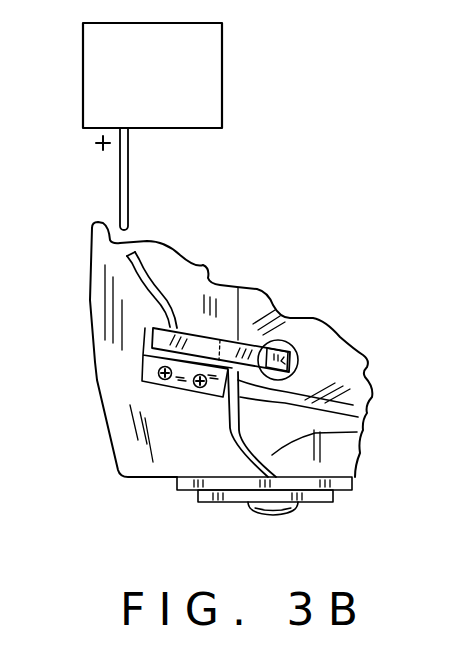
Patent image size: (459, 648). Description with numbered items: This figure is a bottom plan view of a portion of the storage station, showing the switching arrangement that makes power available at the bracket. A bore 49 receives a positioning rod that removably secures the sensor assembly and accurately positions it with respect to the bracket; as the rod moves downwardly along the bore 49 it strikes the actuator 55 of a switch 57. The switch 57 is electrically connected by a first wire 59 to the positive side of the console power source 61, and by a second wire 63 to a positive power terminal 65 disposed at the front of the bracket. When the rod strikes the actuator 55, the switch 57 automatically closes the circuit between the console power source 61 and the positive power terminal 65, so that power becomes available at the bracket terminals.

The console power source 61 is at (222, 100).
The first wire 59 is at (128, 204).
The switch 57 is at (185, 330).
The bore 49 is at (281, 340).
The actuator 55 is at (353, 405).
The second wire 63 is at (357, 432).
The positive power terminal 65 is at (285, 513).